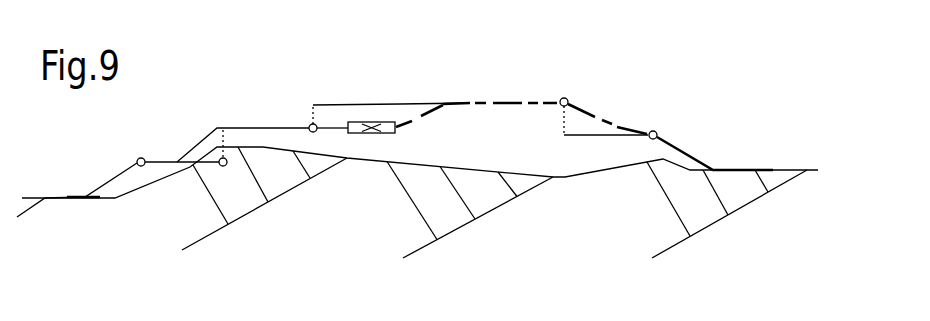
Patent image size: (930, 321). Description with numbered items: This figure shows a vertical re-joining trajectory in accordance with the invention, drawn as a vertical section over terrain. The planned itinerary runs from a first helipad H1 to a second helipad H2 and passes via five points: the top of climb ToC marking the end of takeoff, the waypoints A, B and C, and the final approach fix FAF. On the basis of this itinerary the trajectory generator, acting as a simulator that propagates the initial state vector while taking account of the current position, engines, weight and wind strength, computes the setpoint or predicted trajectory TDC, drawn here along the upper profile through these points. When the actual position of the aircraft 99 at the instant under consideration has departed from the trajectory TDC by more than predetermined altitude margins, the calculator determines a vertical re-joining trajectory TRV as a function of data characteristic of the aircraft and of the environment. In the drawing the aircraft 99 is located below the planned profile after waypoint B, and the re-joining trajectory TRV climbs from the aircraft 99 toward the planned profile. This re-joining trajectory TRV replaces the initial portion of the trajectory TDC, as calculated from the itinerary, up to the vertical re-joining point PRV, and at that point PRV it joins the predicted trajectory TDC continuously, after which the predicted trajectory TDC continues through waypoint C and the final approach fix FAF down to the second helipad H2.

The aircraft 99 is at (360, 122).
The top of climb ToC is at (140, 147).
The waypoint A is at (231, 161).
The waypoint B is at (302, 115).
The waypoint C is at (575, 106).
The vertical re-joining point PRV is at (462, 96).
The setpoint trajectory TDC is at (515, 102).
The vertical re-joining trajectory TRV is at (424, 113).
The final approach fix FAF is at (653, 121).
The first helipad H1 is at (77, 190).
The second helipad H2 is at (715, 153).